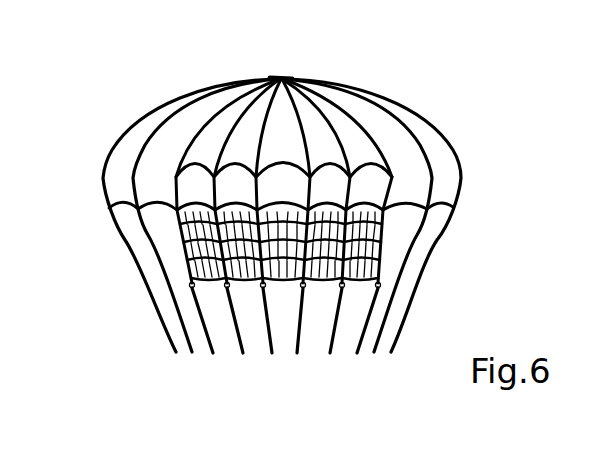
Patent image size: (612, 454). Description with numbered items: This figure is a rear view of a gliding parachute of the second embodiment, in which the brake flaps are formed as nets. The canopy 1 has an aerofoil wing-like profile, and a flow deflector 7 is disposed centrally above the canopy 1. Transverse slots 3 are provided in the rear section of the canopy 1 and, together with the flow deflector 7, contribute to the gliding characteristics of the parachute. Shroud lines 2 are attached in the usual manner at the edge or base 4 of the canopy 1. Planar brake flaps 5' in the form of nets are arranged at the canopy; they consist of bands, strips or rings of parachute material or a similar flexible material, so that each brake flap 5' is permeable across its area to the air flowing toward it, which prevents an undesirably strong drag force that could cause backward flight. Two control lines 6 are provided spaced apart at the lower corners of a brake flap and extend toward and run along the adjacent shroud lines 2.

The canopy 1 is at (140, 122).
The shroud lines 2 is at (195, 231).
The transverse slots 3 is at (370, 165).
The base 4 is at (441, 211).
The brake flaps 5' is at (288, 269).
The control lines 6 is at (240, 353).
The flow deflector 7 is at (284, 77).